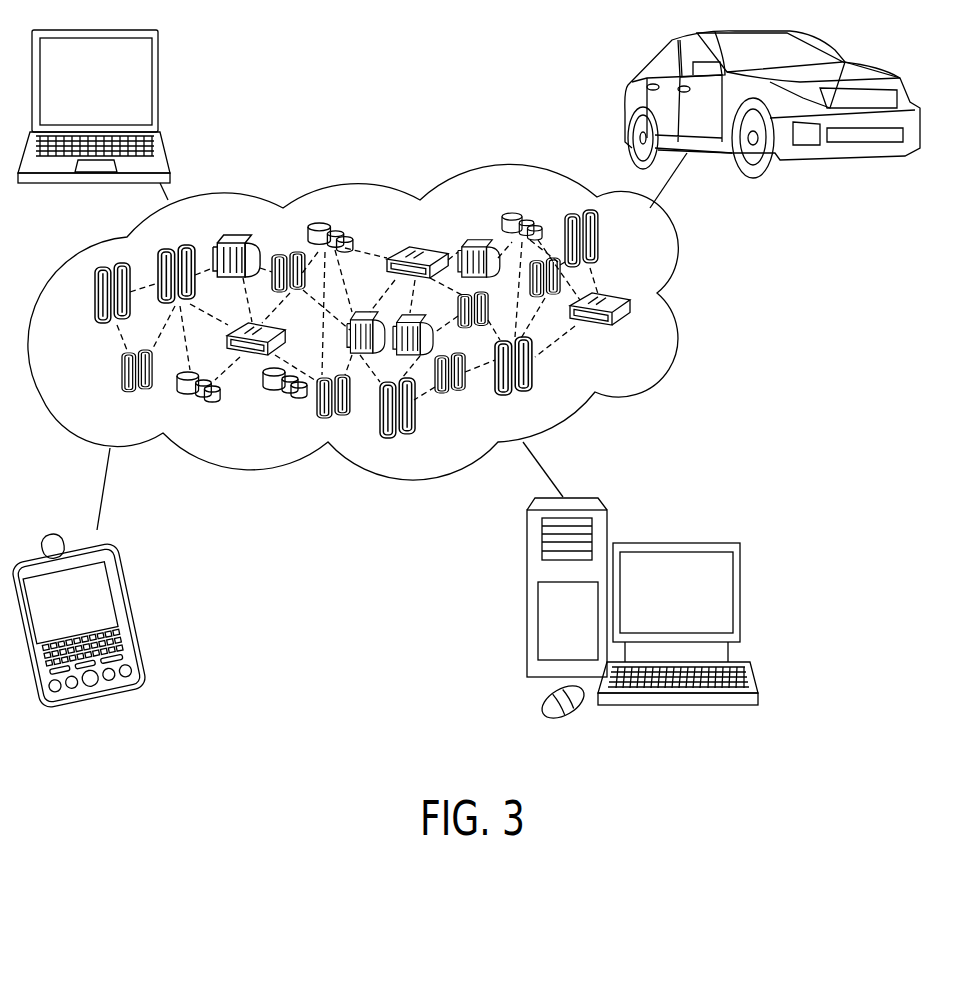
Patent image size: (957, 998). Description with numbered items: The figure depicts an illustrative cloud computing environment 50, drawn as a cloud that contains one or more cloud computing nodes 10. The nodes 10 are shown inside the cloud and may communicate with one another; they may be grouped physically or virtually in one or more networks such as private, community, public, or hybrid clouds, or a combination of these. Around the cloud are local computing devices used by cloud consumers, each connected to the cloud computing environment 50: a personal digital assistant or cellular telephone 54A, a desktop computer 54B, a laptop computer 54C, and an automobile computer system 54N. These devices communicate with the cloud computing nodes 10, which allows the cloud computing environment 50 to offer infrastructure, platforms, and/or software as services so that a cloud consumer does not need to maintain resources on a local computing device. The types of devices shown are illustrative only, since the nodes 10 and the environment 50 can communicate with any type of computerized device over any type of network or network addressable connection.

The cloud computing nodes 10 is at (645, 348).
The cloud computing environment 50 is at (693, 248).
The personal digital assistant or cellular telephone 54A is at (128, 592).
The desktop computer 54B is at (740, 592).
The laptop computer 54C is at (160, 83).
The automobile computer system 54N is at (810, 48).